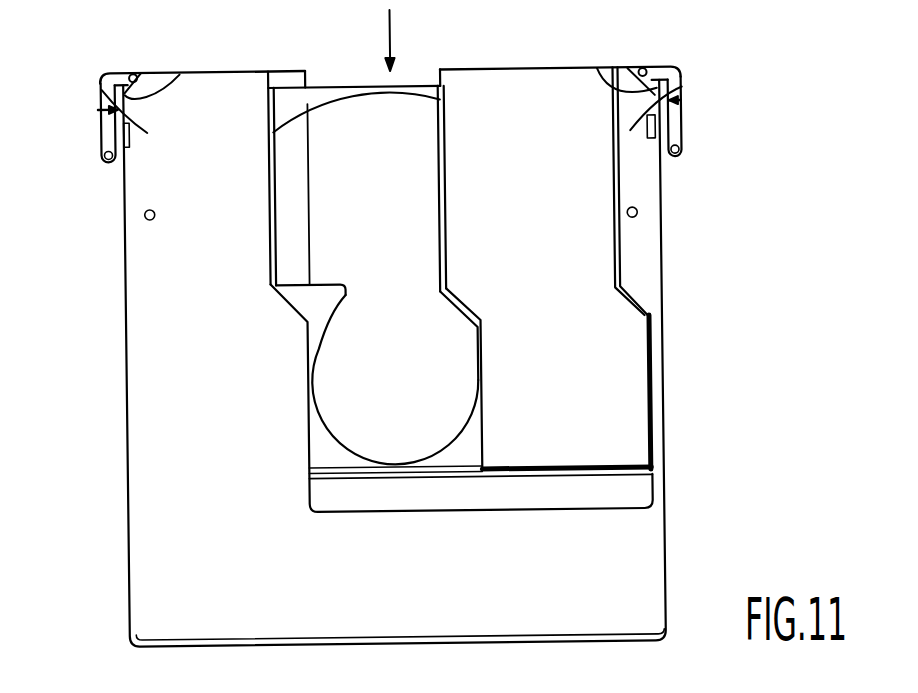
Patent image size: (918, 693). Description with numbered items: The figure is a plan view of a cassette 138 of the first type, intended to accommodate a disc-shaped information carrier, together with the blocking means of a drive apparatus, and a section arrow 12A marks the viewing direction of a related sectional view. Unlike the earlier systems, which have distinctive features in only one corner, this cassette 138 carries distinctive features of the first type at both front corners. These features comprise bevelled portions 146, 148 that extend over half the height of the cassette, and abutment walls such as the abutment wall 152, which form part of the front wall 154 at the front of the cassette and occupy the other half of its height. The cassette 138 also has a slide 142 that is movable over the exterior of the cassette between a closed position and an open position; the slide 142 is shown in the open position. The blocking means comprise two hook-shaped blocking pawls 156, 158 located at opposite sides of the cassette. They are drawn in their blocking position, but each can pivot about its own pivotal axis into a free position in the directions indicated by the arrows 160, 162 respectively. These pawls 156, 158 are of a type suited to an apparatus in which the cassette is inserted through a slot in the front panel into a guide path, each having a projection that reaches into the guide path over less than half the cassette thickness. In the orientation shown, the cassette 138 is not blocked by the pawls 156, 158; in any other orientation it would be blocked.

The cassette of the first type 138 is at (147, 72).
The slide 142 is at (503, 100).
The bevelled portion 146 is at (140, 92).
The bevelled portion 148 is at (599, 68).
The abutment wall 152 is at (632, 64).
The front wall 154 is at (242, 72).
The hook-shaped blocking pawl 156 is at (105, 132).
The hook-shaped blocking pawl 158 is at (676, 128).
The arrow 160 is at (103, 90).
The arrow 162 is at (682, 83).
The view arrow 12A is at (390, 33).